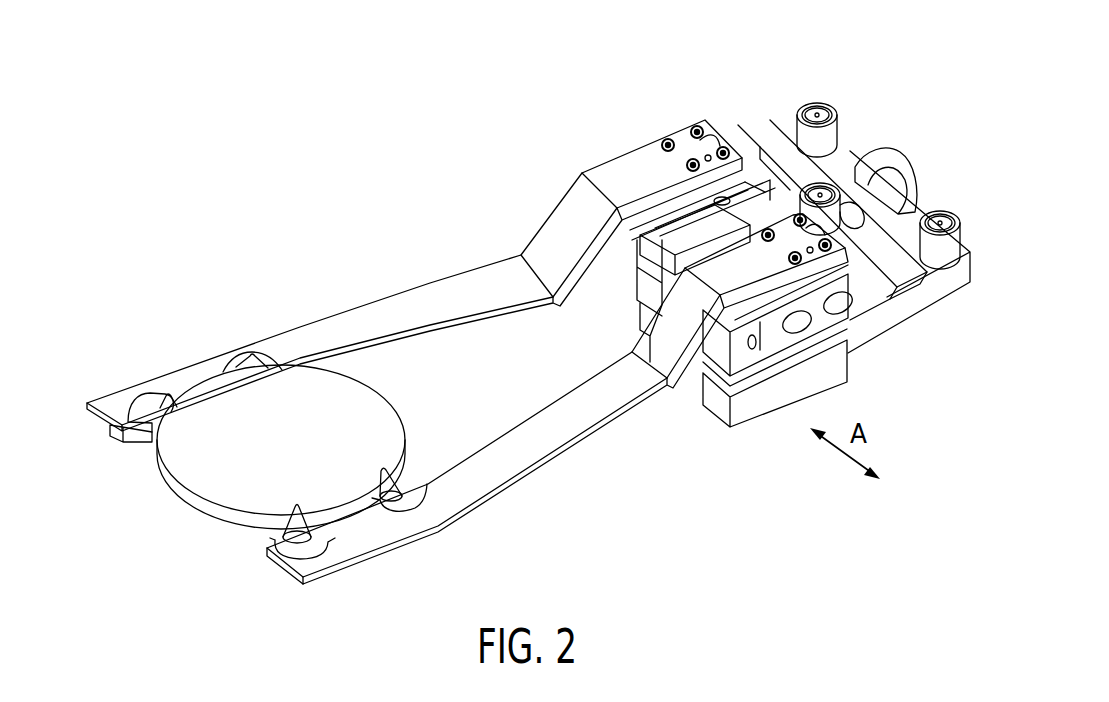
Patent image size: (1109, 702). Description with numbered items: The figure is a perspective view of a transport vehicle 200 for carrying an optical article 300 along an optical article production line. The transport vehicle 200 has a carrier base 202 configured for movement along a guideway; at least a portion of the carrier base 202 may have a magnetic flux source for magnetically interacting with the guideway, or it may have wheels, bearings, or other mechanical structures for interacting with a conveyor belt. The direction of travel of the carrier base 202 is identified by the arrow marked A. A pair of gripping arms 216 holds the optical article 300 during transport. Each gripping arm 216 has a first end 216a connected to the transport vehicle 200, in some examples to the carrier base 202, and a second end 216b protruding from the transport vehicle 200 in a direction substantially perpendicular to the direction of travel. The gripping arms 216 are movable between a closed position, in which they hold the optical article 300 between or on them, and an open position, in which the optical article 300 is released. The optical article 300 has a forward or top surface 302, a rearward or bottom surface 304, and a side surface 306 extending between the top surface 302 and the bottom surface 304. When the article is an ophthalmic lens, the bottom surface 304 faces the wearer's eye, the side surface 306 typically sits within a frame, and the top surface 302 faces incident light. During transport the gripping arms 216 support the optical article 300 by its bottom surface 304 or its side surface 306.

The transport vehicle 200 is at (793, 78).
The carrier base 202 is at (858, 368).
The gripping arms 216 is at (460, 278).
The first end 216a is at (640, 163).
The second end 216b is at (187, 377).
The optical article 300 is at (162, 499).
The top surface 302 is at (355, 421).
The bottom surface 304 is at (233, 528).
The side surface 306 is at (410, 490).